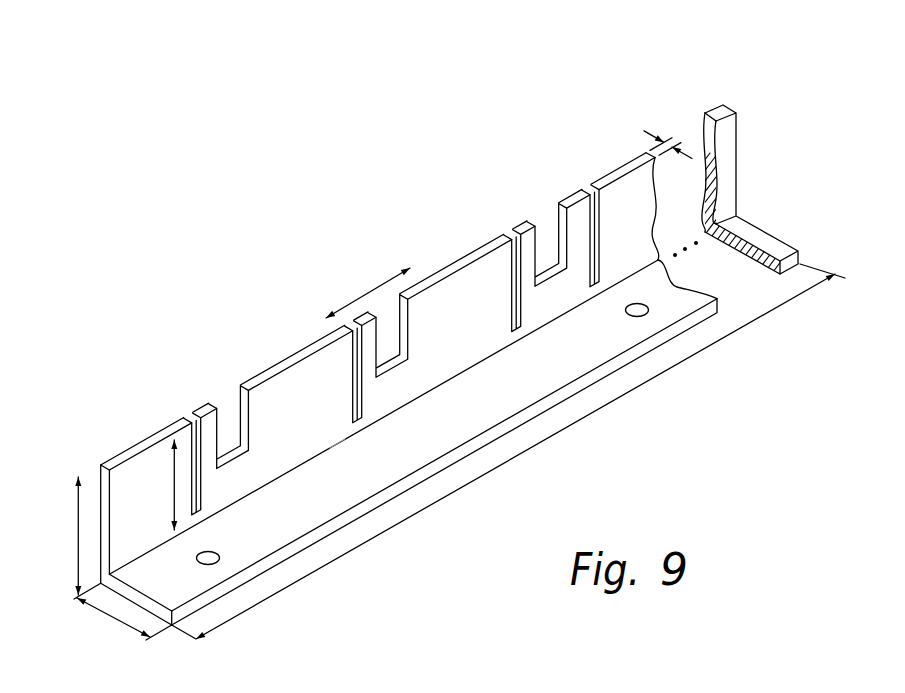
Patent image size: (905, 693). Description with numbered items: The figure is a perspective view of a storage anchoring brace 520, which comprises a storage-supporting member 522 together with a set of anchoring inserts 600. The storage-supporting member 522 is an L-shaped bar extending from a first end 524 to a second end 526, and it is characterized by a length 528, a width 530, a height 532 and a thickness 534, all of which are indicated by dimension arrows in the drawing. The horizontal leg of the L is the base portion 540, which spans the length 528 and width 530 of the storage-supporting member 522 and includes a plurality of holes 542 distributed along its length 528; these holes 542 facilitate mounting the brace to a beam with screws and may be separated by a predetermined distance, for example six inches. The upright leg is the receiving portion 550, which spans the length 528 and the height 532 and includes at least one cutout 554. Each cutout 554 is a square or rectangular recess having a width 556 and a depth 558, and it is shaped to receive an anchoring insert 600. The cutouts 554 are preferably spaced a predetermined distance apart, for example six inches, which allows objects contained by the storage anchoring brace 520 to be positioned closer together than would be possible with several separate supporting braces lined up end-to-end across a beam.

The storage anchoring brace 520 is at (420, 82).
The storage-supporting member 522 is at (678, 293).
The first end 524 is at (133, 597).
The second end 526 is at (740, 173).
The length 528 is at (515, 458).
The width 530 is at (110, 618).
The height 532 is at (78, 536).
The thickness 534 is at (662, 131).
The base portion 540 is at (338, 500).
The hole 542 is at (217, 553).
The receiving portion 550 is at (492, 248).
The cutout 554 is at (290, 423).
The width 556 is at (336, 310).
The depth 558 is at (173, 485).
The anchoring insert 600 is at (267, 462).